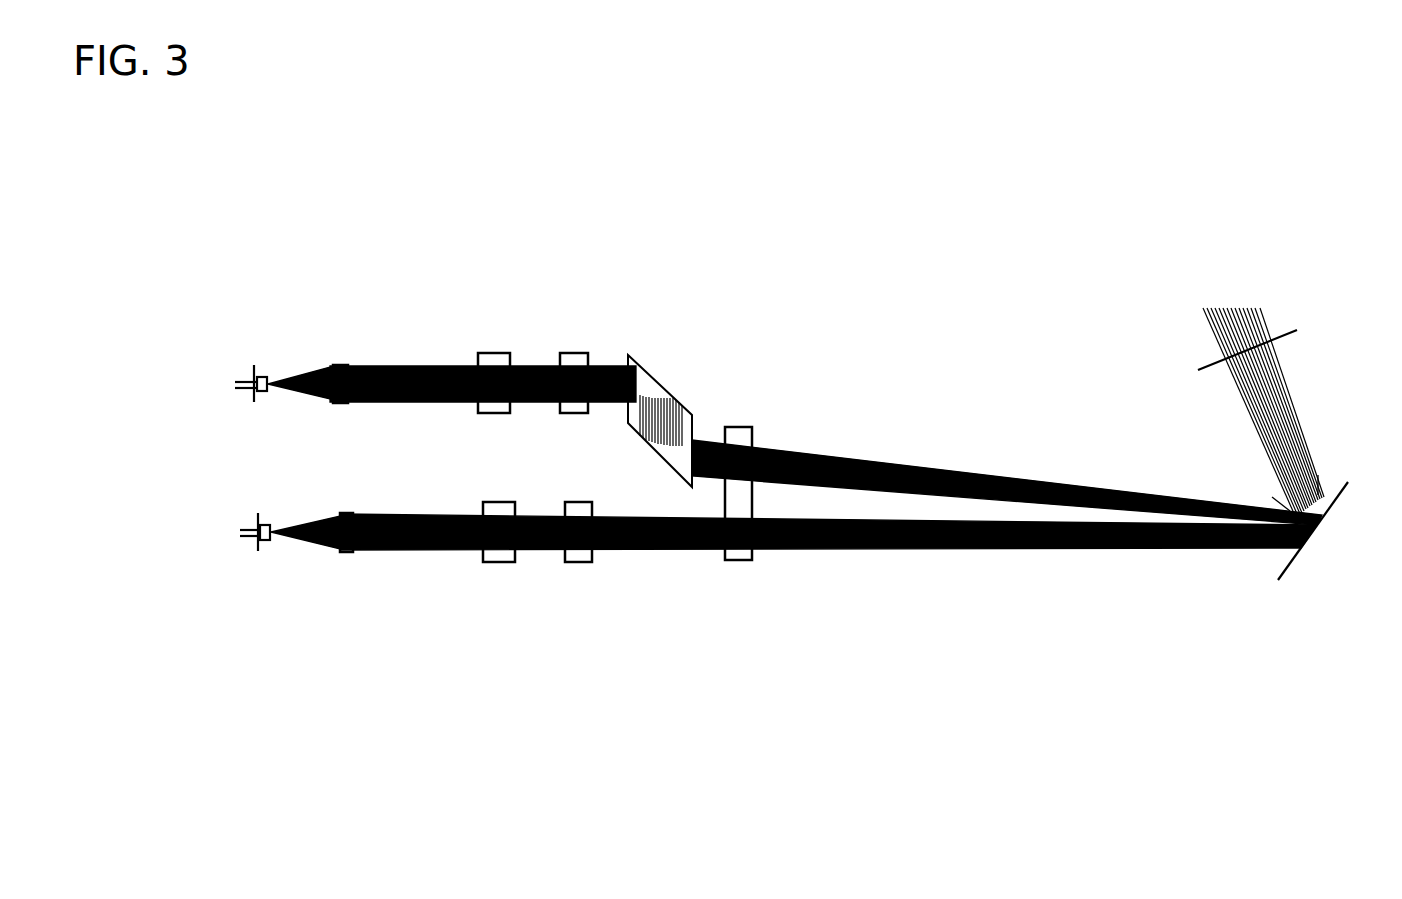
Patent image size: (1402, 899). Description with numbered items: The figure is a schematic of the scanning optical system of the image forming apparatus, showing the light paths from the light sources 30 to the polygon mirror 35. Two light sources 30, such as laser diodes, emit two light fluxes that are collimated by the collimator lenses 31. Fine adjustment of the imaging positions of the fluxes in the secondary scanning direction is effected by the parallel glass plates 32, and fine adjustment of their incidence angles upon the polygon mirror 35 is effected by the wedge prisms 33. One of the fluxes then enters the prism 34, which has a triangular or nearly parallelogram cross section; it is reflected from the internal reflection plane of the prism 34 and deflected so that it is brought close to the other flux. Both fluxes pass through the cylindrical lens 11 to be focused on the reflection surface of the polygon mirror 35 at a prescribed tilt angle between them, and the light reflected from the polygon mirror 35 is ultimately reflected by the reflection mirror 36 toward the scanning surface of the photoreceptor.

The light sources 30 is at (255, 396).
The collimator lenses 31 is at (336, 404).
The parallel glass plates 32 is at (497, 414).
The wedge prisms 33 is at (572, 414).
The prism 34 is at (630, 356).
The cylindrical lens 11 is at (738, 427).
The polygon mirror 35 is at (1294, 566).
The reflection mirror 36 is at (1289, 336).